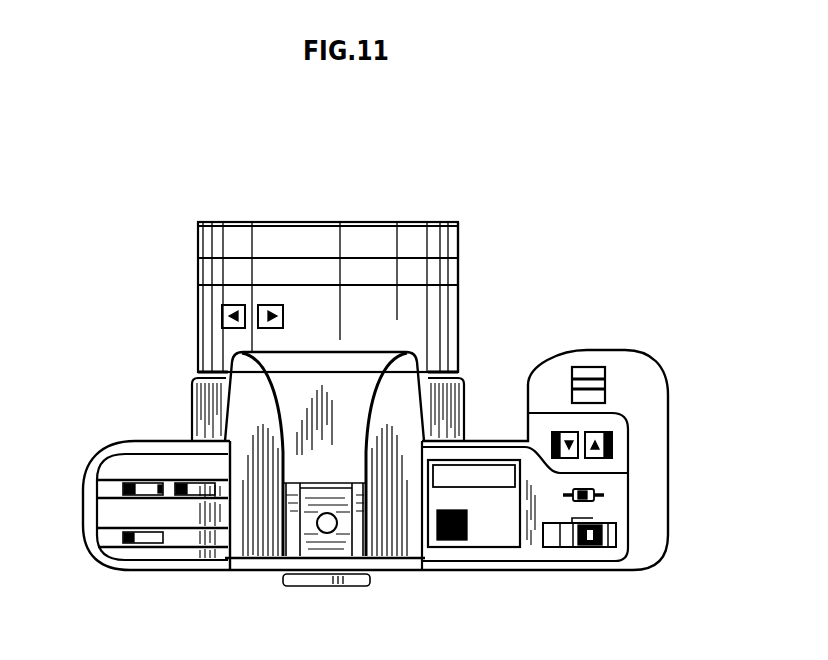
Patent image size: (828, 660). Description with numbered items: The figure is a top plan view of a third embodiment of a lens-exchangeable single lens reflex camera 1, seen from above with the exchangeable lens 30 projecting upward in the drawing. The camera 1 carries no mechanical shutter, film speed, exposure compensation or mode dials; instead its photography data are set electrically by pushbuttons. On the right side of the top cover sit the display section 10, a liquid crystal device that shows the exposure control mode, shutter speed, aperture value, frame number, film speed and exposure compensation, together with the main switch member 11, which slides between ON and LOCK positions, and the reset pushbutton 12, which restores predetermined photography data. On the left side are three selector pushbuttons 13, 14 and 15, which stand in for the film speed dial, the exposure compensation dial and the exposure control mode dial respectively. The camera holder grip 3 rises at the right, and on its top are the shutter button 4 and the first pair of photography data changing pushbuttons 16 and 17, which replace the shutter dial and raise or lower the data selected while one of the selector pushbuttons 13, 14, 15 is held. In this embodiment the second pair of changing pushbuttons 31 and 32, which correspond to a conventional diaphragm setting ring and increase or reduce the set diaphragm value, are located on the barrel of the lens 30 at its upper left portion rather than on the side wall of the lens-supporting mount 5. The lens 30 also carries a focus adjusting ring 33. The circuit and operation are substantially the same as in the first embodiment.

The camera 1 is at (221, 571).
The camera holder grip 3 is at (648, 397).
The shutter button 4 is at (600, 367).
The lens-supporting mount 5 is at (205, 398).
The display section 10 is at (486, 537).
The main switch member 11 is at (590, 547).
The reset pushbutton 12 is at (600, 491).
The selector pushbutton 13 is at (172, 482).
The selector pushbutton 14 is at (120, 482).
The selector pushbutton 15 is at (124, 545).
The photography data changing pushbutton 16 is at (585, 437).
The photography data changing pushbutton 17 is at (558, 432).
The exchangeable lens 30 is at (368, 267).
The changing pushbutton 31 is at (275, 305).
The changing pushbutton 32 is at (228, 305).
The focus adjusting ring 33 is at (459, 268).